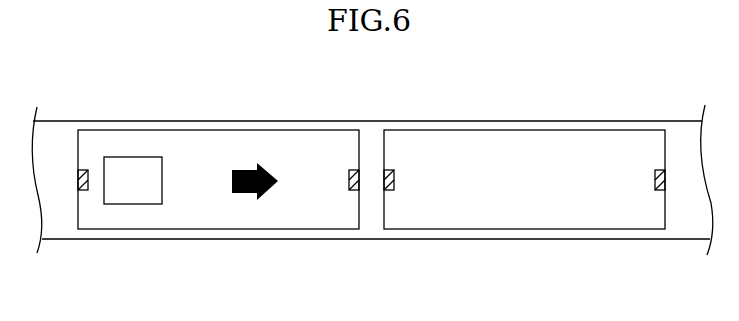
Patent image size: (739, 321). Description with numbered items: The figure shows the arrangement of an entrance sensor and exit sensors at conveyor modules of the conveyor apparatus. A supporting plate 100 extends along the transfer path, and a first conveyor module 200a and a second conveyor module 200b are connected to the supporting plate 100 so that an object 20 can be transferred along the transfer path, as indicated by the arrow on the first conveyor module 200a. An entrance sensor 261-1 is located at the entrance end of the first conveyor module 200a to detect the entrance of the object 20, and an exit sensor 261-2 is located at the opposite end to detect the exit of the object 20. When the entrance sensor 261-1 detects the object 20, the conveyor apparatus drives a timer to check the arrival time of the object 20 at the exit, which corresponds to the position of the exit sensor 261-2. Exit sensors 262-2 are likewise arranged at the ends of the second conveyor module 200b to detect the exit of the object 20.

The supporting plate 100 is at (96, 244).
The first conveyor module 200a is at (236, 119).
The second conveyor module 200b is at (541, 119).
The object 20 is at (130, 167).
The entrance sensor 261-1 is at (84, 170).
The exit sensor 261-2 is at (351, 170).
The exit sensor 262-2 is at (389, 165).